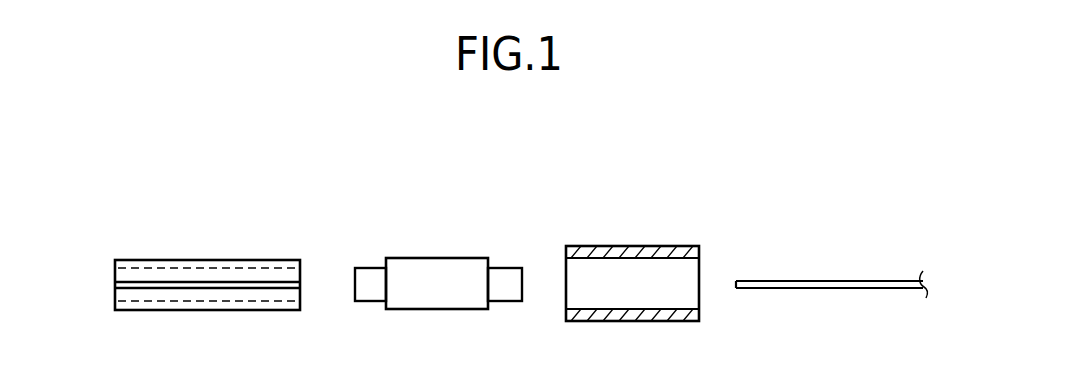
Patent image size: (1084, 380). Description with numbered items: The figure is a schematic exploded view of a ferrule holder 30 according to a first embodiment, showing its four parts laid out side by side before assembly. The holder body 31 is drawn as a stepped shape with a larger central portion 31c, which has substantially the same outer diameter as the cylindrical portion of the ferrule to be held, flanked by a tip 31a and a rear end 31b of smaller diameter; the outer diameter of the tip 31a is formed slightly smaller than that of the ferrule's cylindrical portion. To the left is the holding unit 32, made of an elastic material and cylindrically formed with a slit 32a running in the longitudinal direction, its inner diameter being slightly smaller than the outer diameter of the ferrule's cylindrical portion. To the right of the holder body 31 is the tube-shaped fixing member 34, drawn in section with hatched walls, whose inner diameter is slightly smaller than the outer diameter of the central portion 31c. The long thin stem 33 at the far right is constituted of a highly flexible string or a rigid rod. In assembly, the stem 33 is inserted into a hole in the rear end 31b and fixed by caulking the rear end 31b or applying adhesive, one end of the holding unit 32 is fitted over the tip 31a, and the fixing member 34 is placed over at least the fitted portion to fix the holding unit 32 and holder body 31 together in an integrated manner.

The ferrule holder 30 is at (738, 163).
The holder body 31 is at (428, 242).
The tip 31a is at (366, 279).
The rear end 31b is at (500, 279).
The central portion 31c is at (417, 276).
The holding unit 32 is at (201, 255).
The slit 32a is at (166, 287).
The stem 33 is at (792, 281).
The fixing member 34 is at (618, 251).